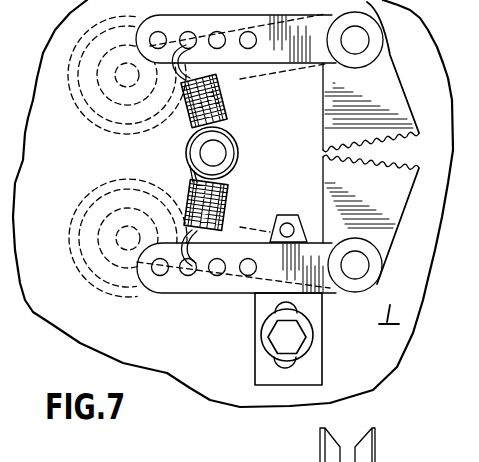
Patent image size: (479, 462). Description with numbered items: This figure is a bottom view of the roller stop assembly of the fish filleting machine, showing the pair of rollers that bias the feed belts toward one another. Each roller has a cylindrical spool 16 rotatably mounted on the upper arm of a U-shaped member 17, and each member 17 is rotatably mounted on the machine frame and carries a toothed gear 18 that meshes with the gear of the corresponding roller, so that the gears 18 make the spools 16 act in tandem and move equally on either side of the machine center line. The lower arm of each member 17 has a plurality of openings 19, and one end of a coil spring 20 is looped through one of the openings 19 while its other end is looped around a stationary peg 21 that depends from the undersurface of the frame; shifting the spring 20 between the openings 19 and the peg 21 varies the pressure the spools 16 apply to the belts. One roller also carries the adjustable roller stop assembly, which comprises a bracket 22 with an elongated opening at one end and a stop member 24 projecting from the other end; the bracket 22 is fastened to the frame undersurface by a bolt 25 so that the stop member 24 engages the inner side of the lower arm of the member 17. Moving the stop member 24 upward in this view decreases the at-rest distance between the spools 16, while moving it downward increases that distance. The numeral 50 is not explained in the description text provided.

The cylindrical spool 16 is at (88, 128).
The U-shaped member 17 is at (395, 27).
The toothed gear 18 is at (418, 118).
The openings 19 is at (152, 33).
The coil spring 20 is at (228, 108).
The stationary peg 21 is at (207, 153).
The bracket 22 is at (322, 370).
The stop member 24 is at (287, 215).
The bolt 25 is at (303, 333).
The housing 50 is at (246, 203).